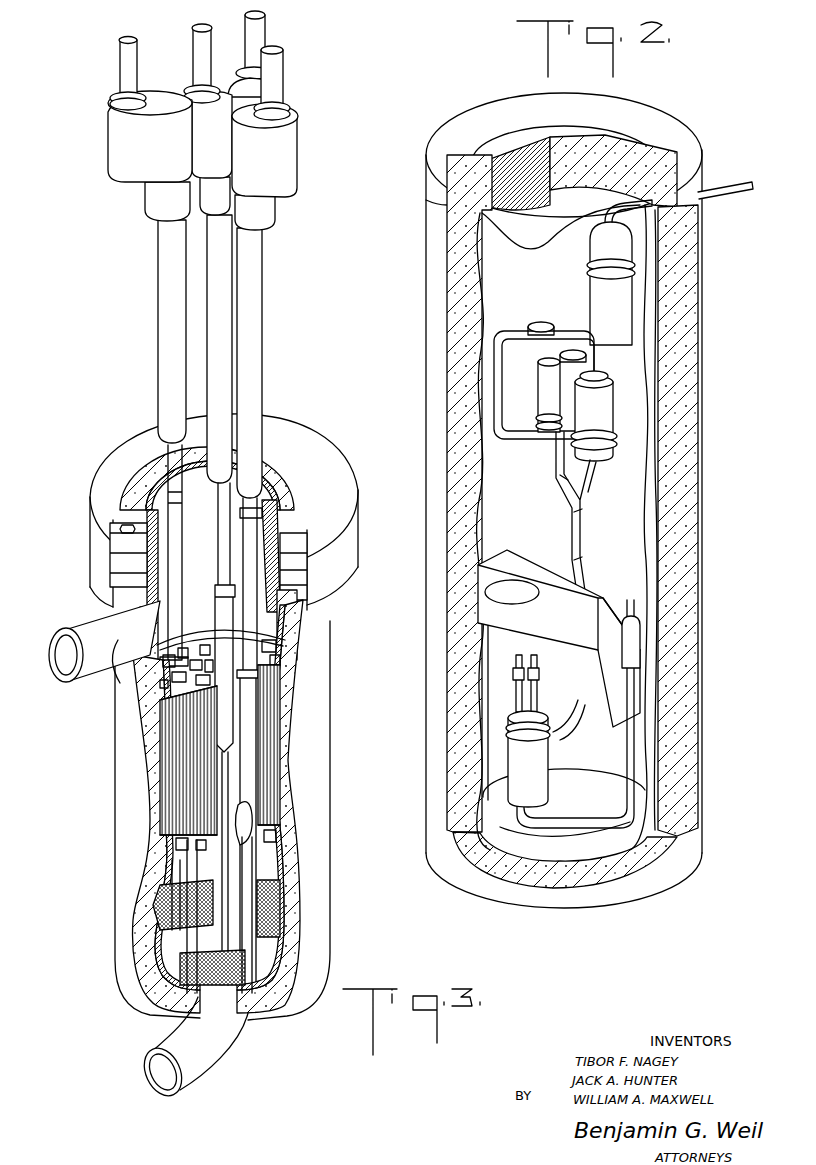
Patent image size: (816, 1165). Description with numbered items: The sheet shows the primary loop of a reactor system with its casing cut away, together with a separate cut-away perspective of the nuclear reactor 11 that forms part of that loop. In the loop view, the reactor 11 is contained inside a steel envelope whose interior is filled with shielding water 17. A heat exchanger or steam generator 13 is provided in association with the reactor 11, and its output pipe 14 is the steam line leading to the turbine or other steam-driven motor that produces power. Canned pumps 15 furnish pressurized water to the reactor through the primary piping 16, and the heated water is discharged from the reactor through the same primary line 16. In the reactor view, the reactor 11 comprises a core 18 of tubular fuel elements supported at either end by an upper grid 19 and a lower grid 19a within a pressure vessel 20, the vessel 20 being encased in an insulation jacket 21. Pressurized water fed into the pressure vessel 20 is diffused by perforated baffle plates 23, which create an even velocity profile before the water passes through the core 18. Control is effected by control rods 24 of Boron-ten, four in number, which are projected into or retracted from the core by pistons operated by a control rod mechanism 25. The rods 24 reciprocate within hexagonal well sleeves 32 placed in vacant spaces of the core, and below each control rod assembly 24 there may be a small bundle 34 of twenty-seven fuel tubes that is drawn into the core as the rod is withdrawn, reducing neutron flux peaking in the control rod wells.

In FIG. 2, the nuclear reactor 11 is at (530, 770).
In FIG. 3, the nuclear reactor 11 is at (100, 859).
In FIG. 2, the heat exchanger or steam generator 13 is at (615, 472).
In FIG. 2, the output pipe 14 is at (720, 193).
In FIG. 2, the canned pumps 15 is at (600, 407).
In FIG. 2, the primary piping 16 is at (573, 498).
In FIG. 3, the primary piping 16 is at (68, 614).
In FIG. 2, the shielding water 17 is at (607, 762).
In FIG. 3, the core 18 is at (270, 715).
In FIG. 2, the upper grid 19 is at (498, 233).
In FIG. 3, the upper grid 19 is at (160, 688).
In FIG. 3, the lower grid 19a is at (182, 852).
In FIG. 3, the pressure vessel 20 is at (293, 762).
In FIG. 3, the insulation jacket 21 is at (293, 783).
In FIG. 3, the baffle plates 23 is at (222, 1060).
In FIG. 3, the control rods 24 is at (285, 500).
In FIG. 3, the control rod mechanism 25 is at (285, 150).
In FIG. 3, the hexagonal sleeves 32 is at (248, 692).
In FIG. 3, the small bundle of fuel tubes 34 is at (250, 835).